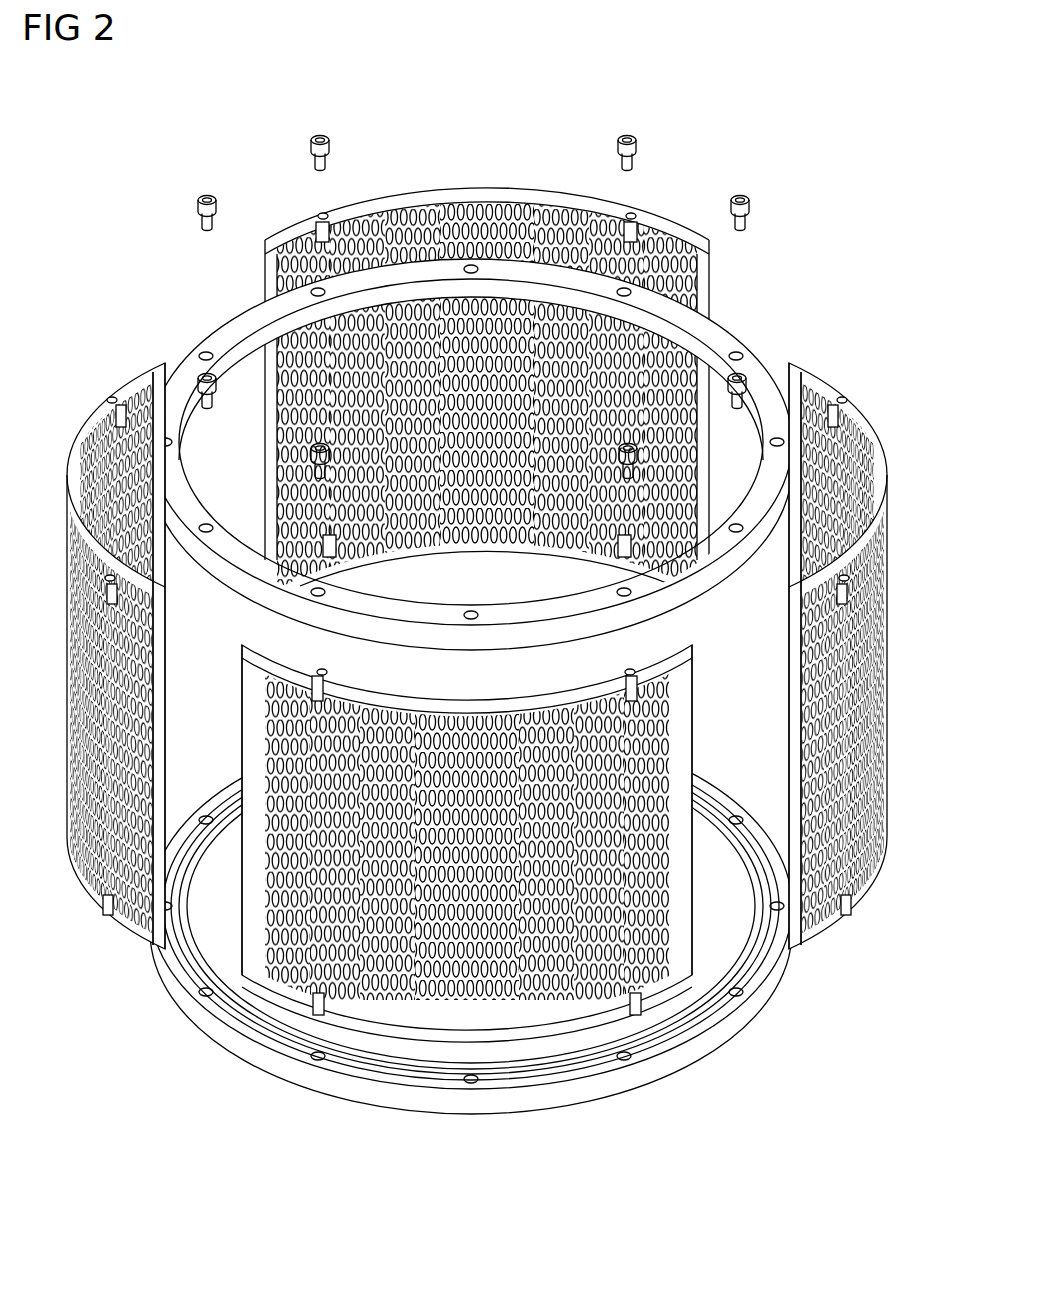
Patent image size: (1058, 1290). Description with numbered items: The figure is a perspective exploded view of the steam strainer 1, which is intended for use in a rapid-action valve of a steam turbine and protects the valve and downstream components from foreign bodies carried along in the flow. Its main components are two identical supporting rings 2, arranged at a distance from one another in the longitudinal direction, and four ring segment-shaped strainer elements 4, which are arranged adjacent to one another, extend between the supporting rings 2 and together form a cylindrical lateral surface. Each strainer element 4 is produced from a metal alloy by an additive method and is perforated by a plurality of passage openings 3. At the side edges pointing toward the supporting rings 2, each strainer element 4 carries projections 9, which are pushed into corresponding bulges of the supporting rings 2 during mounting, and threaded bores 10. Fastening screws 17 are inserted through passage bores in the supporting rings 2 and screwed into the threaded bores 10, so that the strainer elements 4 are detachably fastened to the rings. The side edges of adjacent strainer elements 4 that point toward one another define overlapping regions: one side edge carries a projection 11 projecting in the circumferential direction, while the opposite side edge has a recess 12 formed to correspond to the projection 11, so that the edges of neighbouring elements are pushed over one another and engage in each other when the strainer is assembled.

The steam strainer 1 is at (815, 167).
The supporting ring 2 is at (253, 333).
The passage opening 3 is at (290, 990).
The strainer element 4 is at (477, 625).
The projection 9 is at (333, 232).
The threaded bore 10 is at (320, 214).
The projection 11 is at (705, 240).
The recess 12 is at (266, 240).
The fastening screw 17 is at (320, 138).